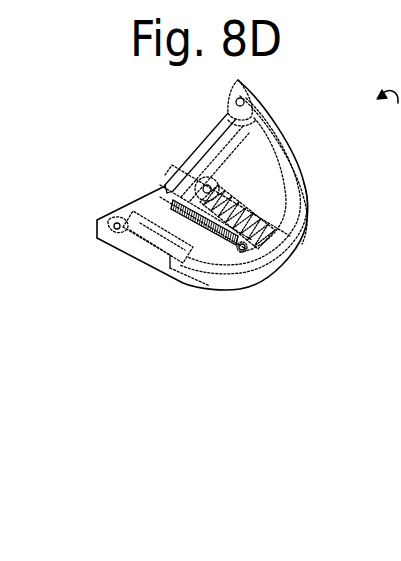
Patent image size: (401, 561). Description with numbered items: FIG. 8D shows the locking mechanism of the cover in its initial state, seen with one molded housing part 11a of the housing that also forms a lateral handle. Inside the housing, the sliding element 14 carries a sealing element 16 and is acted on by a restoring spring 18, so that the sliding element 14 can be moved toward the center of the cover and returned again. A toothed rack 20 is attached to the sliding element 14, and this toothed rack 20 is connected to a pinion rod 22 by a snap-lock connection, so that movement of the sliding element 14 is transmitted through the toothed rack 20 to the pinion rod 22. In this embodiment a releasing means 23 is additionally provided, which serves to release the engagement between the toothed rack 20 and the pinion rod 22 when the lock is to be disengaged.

The molded housing part 11a is at (290, 241).
The sliding element 14 is at (222, 193).
The sealing element 16 is at (193, 168).
The restoring spring 18 is at (245, 228).
The toothed rack 20 is at (222, 243).
The pinion rod 22 is at (242, 247).
The releasing means 23 is at (246, 247).